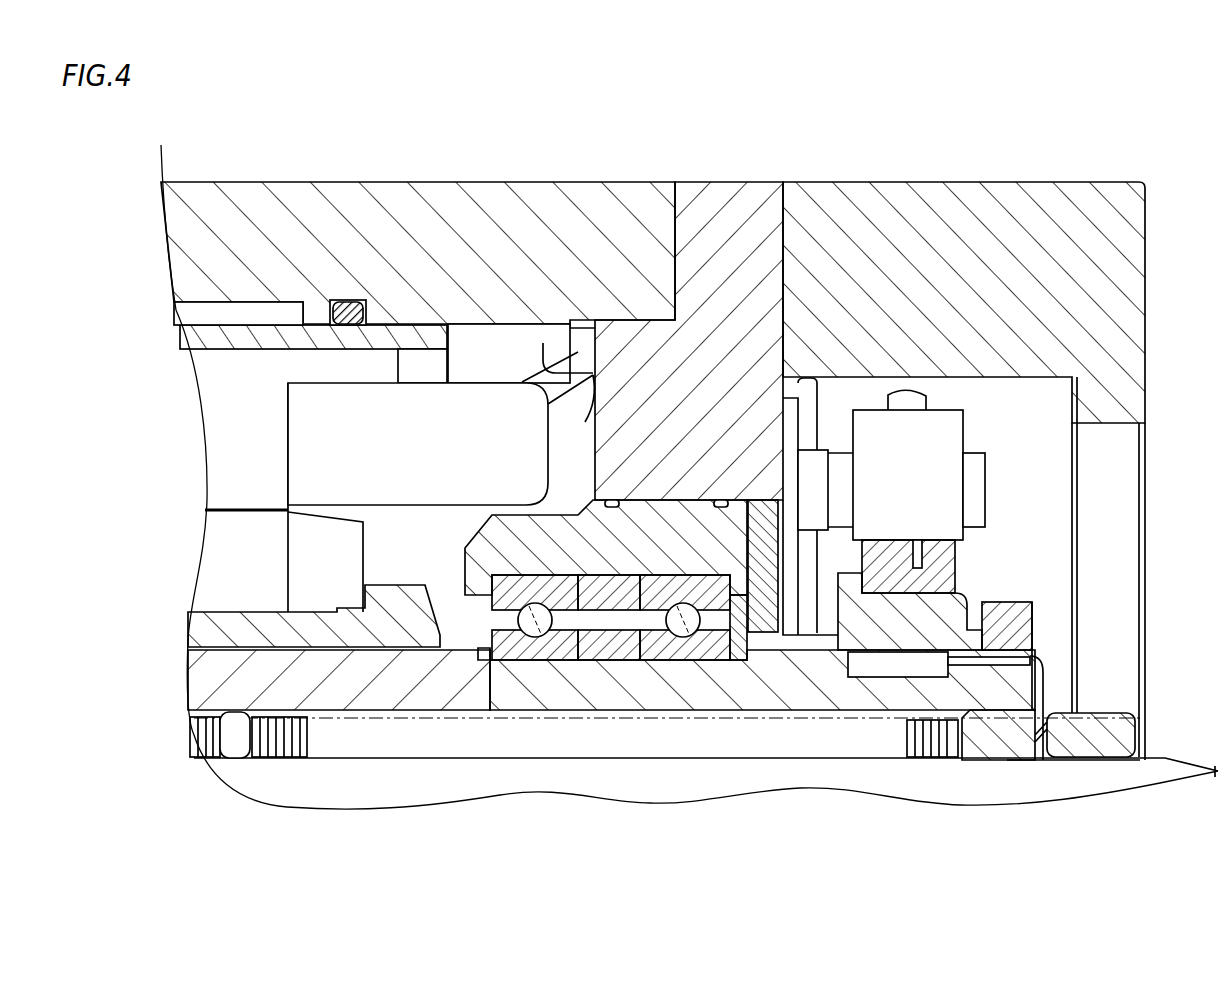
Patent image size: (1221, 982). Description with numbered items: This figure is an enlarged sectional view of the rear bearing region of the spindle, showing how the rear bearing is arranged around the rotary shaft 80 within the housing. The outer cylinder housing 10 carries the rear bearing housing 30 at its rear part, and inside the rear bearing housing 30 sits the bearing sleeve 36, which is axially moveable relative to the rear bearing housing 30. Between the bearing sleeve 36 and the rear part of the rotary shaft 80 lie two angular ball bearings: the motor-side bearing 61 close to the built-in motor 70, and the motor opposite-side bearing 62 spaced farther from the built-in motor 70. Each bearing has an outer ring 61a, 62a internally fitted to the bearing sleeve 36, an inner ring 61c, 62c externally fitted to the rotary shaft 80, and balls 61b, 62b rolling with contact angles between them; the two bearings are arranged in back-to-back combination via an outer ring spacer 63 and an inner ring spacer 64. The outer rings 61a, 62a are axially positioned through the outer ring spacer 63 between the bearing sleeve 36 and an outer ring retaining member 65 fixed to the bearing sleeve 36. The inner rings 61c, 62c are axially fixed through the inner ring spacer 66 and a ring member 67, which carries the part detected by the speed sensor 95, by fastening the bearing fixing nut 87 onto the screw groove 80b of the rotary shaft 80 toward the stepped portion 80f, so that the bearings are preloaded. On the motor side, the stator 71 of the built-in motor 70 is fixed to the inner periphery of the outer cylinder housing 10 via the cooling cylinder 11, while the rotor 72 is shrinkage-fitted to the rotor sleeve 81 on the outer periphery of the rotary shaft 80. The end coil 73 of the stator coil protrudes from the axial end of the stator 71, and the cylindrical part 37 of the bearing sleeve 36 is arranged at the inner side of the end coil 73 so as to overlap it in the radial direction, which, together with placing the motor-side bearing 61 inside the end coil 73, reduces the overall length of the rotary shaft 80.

The outer cylinder housing 10 is at (423, 185).
The cooling cylinder 11 is at (317, 340).
The rear bearing housing 30 is at (730, 185).
The bearing sleeve 36 is at (652, 522).
The cylindrical part 37 is at (512, 537).
The motor-side bearing 61 is at (503, 720).
The outer ring 61a is at (478, 600).
The balls 61b is at (517, 630).
The inner ring 61c is at (545, 598).
The motor opposite-side bearing 62 is at (707, 720).
The outer ring 62a is at (707, 640).
The balls 62b is at (733, 607).
The inner ring 62c is at (660, 600).
The outer ring spacer 63 is at (598, 590).
The inner ring spacer 64 is at (612, 652).
The outer ring retaining member 65 is at (740, 632).
The inner ring spacer 66 is at (762, 580).
The ring member 67 is at (887, 623).
The built-in motor 70 is at (258, 133).
The stator 71 is at (248, 385).
The rotor 72 is at (230, 540).
The end coil 73 is at (383, 410).
The rotary shaft 80 is at (335, 683).
The screw groove 80b is at (1028, 660).
The stepped portion 80f is at (482, 660).
The rotor sleeve 81 is at (240, 633).
The bearing fixing nut 87 is at (1002, 640).
The speed sensor 95 is at (964, 433).